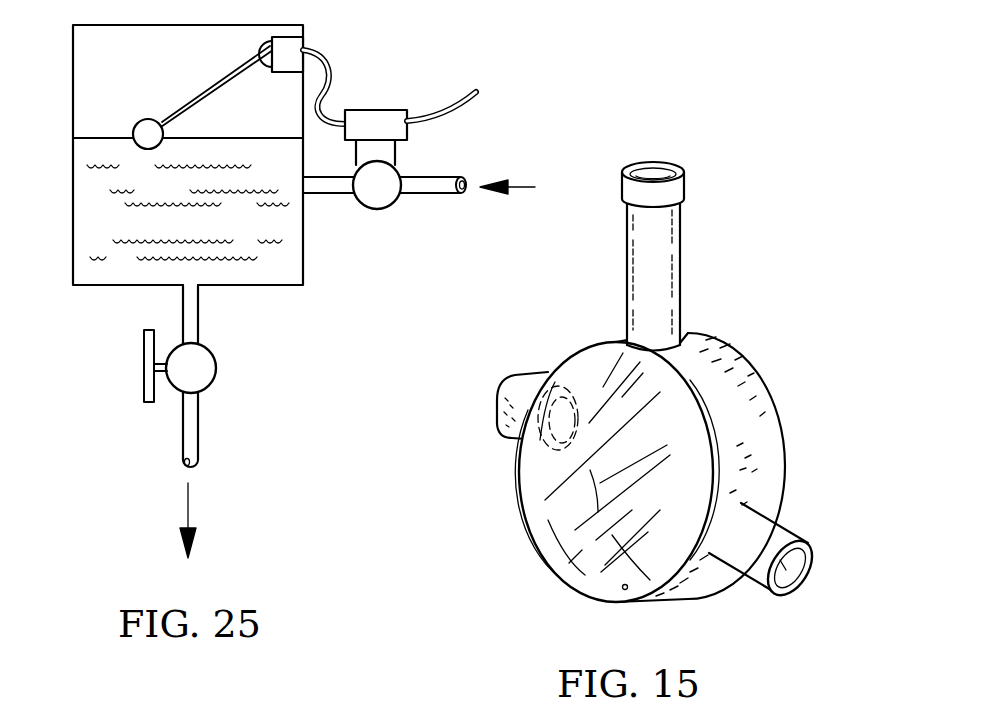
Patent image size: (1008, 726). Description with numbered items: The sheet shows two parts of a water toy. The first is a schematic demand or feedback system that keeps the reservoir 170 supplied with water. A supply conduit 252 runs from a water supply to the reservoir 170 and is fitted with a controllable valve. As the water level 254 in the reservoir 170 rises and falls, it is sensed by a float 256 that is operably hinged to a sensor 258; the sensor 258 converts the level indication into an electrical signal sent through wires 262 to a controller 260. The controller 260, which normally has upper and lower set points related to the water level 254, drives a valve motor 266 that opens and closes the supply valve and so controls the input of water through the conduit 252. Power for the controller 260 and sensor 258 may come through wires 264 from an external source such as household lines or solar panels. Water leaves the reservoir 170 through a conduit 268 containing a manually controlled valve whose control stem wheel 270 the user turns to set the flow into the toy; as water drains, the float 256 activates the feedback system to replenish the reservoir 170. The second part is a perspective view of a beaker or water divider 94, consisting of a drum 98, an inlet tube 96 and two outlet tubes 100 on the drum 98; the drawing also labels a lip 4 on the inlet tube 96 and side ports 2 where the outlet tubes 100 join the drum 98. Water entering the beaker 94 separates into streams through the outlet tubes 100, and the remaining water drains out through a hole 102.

In FIG. 25, the reservoir 170 is at (277, 287).
In FIG. 25, the water level 254 is at (213, 138).
In FIG. 25, the float 256 is at (143, 118).
In FIG. 25, the sensor 258 is at (292, 45).
In FIG. 25, the wires 262 is at (330, 72).
In FIG. 25, the controller 260 is at (386, 110).
In FIG. 25, the wires 264 is at (466, 108).
In FIG. 25, the supply conduit 252 is at (326, 196).
In FIG. 25, the valve motor 266 is at (398, 156).
In FIG. 25, the conduit 268 is at (180, 303).
In FIG. 25, the control stem wheel 270 is at (144, 370).
In FIG. 15, the beaker 94 is at (772, 328).
In FIG. 15, the inlet tube 96 is at (650, 283).
In FIG. 15, the neck lip 4 is at (687, 192).
In FIG. 15, the drum 98 is at (745, 432).
In FIG. 15, the side port 2 is at (505, 384).
In FIG. 15, the outlet tubes 100 is at (522, 412).
In FIG. 15, the hole 102 is at (625, 588).